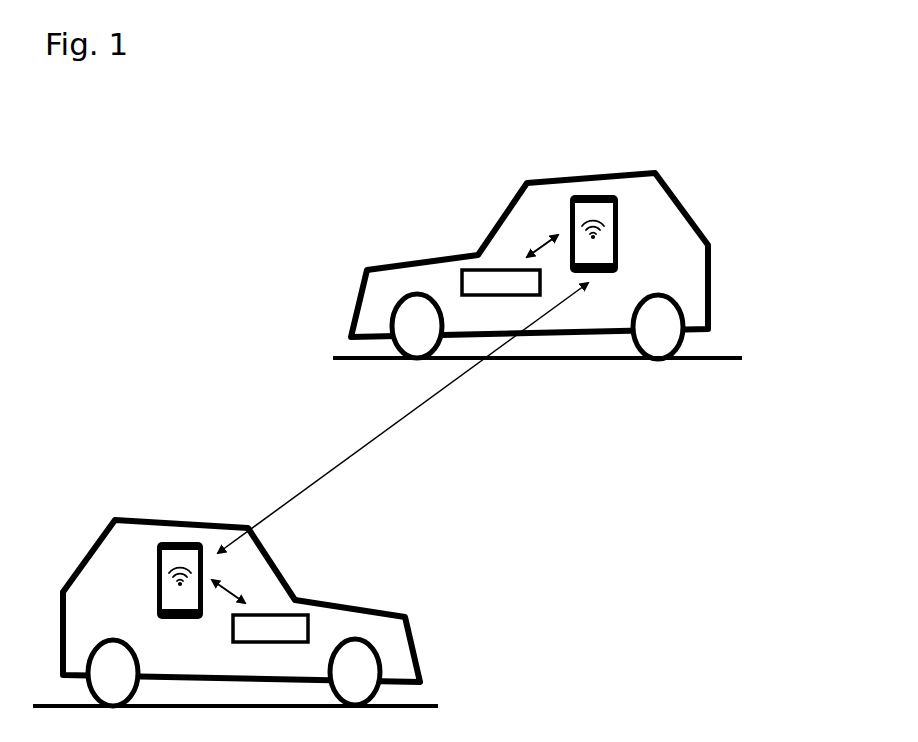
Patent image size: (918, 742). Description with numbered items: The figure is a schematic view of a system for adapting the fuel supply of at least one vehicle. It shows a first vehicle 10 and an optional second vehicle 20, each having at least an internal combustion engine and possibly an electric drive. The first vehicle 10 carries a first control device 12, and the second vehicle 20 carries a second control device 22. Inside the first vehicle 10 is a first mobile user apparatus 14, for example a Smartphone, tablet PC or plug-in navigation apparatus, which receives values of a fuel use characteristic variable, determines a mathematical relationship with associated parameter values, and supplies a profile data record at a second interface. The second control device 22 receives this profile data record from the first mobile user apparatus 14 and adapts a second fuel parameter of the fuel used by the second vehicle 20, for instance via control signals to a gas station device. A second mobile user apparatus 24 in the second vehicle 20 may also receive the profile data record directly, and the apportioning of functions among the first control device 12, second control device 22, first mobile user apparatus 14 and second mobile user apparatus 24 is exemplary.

The first vehicle 10 is at (683, 210).
The first control device 12 is at (473, 268).
The first mobile user apparatus 14 is at (577, 195).
The second vehicle 20 is at (362, 610).
The second control device 22 is at (288, 623).
The second mobile user apparatus 24 is at (167, 540).